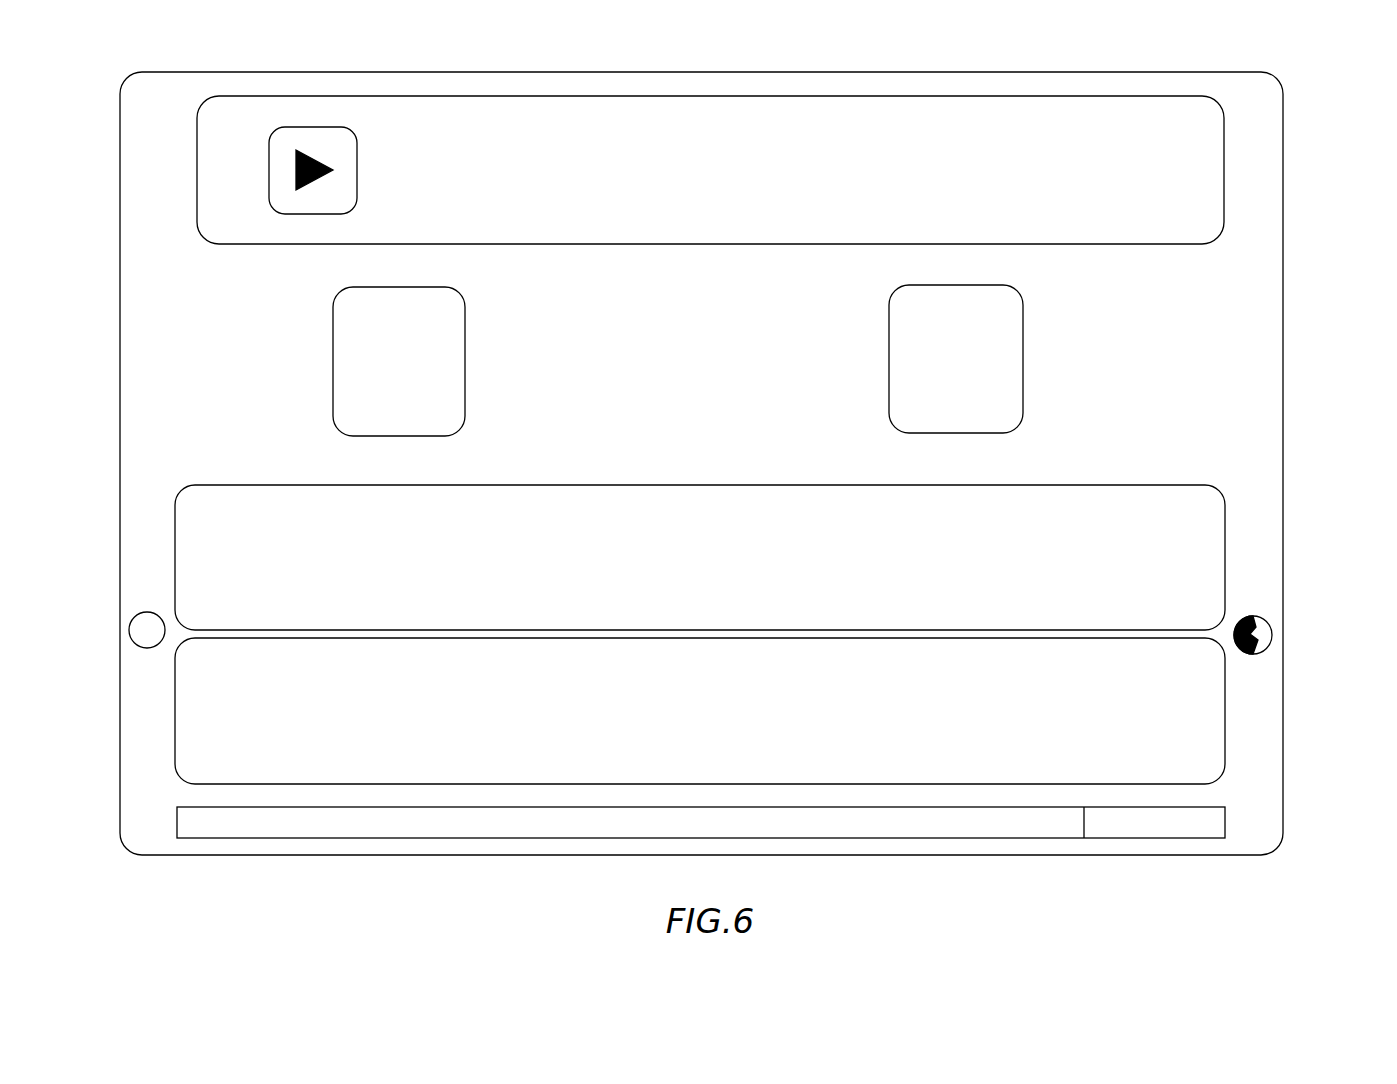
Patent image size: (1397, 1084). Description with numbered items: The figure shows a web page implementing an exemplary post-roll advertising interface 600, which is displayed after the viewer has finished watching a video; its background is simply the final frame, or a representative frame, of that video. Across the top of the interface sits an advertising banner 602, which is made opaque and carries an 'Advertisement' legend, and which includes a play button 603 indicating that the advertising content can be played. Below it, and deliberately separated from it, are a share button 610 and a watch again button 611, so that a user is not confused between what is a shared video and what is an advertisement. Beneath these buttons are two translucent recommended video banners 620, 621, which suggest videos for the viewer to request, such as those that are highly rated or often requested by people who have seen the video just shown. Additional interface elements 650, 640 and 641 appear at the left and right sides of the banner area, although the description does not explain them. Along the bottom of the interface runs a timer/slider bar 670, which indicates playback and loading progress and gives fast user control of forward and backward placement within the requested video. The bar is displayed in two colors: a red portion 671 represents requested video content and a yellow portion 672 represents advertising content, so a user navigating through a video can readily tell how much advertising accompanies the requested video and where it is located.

The post-roll advertising interface 600 is at (1233, 339).
The advertising banner 602 is at (710, 170).
The play button 603 is at (357, 150).
The share button 610 is at (399, 361).
The watch again button 611 is at (956, 359).
The recommended video banner 620 is at (700, 557).
The recommended video banner 621 is at (700, 711).
The scroll button 640 is at (1275, 635).
The scroll indicator 641 is at (1250, 608).
The scroll button 650 is at (153, 605).
The timer/slider bar 670 is at (701, 845).
The red portion 671 is at (629, 824).
The yellow portion 672 is at (1150, 822).